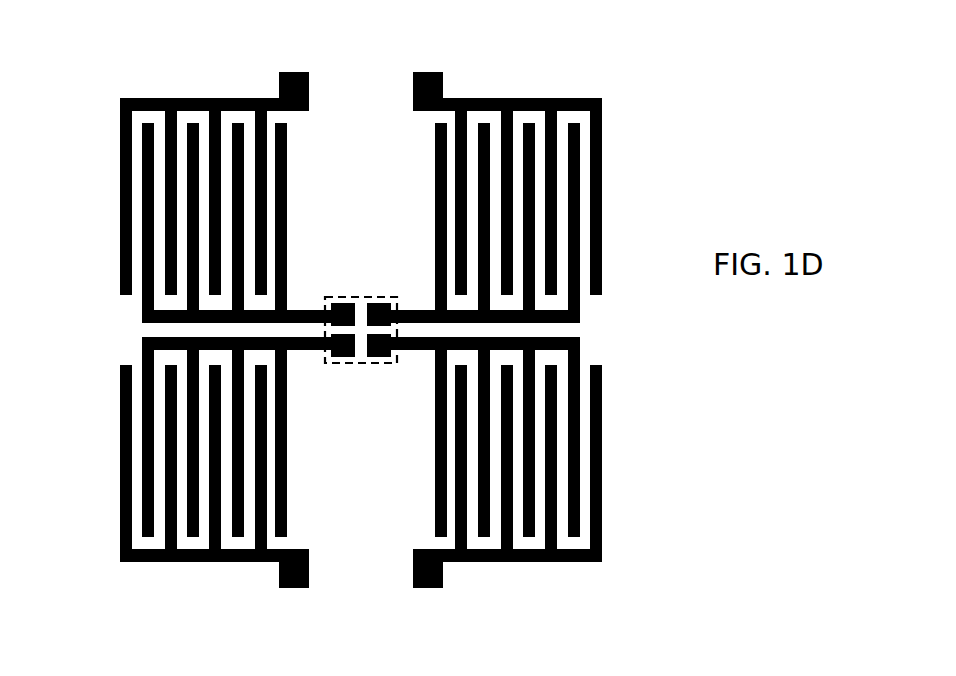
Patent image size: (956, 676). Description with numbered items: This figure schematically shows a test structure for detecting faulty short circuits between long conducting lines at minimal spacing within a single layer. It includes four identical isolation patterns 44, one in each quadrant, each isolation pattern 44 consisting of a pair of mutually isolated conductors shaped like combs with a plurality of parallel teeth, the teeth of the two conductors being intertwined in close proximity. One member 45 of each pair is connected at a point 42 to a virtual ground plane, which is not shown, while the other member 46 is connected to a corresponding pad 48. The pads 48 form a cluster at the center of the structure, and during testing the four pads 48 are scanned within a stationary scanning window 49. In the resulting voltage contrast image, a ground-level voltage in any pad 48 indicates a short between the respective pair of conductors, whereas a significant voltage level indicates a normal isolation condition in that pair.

The connection point to virtual ground plane 42 is at (413, 74).
The isolation pattern 44 is at (92, 177).
The grounded comb member 45 is at (122, 270).
The pad-connected comb member 46 is at (142, 319).
The pad 48 is at (380, 305).
The stationary scanning window 49 is at (355, 363).